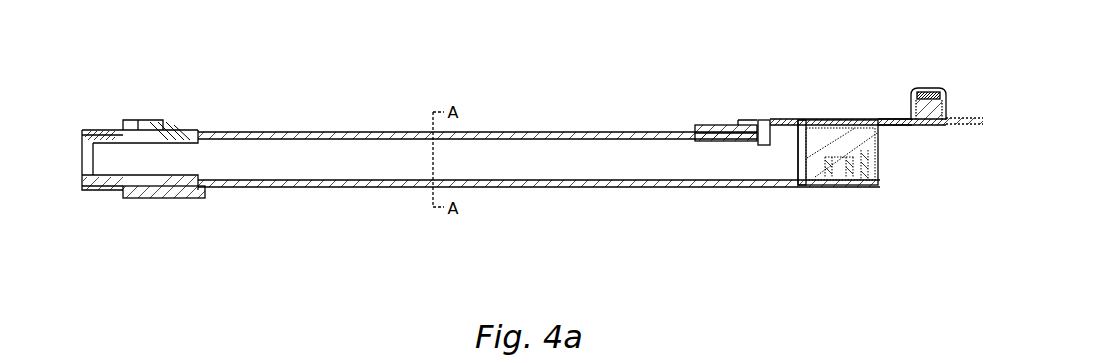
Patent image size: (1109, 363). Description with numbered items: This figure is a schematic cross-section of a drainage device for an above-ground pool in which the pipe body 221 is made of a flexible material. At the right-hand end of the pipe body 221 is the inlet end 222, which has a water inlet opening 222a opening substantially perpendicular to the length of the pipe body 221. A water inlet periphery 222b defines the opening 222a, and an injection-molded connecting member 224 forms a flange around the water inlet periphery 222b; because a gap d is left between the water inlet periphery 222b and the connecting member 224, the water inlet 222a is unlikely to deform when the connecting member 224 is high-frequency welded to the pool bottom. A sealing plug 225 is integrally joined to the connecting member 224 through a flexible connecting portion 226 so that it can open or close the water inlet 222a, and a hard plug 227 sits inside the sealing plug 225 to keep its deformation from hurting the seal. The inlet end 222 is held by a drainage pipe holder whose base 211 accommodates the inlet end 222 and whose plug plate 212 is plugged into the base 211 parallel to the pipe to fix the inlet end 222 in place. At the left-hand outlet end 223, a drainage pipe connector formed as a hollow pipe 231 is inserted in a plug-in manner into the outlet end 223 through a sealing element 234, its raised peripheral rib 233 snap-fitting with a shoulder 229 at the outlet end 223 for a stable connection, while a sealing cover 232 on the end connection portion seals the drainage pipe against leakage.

The pipe body 221 is at (320, 132).
The sealing cover 232 is at (98, 132).
The shoulder 229 is at (129, 126).
The outlet end 223 is at (172, 128).
The raised peripheral rib 233 is at (127, 187).
The hollow pipe 231 is at (163, 177).
The sealing element 234 is at (177, 180).
The plug plate 212 is at (717, 127).
The base 211 is at (860, 160).
The water inlet opening 222a is at (785, 127).
The water inlet periphery 222b is at (800, 130).
The connecting member 224 is at (817, 122).
The inlet end 222 is at (802, 148).
The flexible connecting portion 226 is at (885, 123).
The hard plug 227 is at (928, 90).
The sealing plug 225 is at (938, 107).
The gap d is at (761, 120).